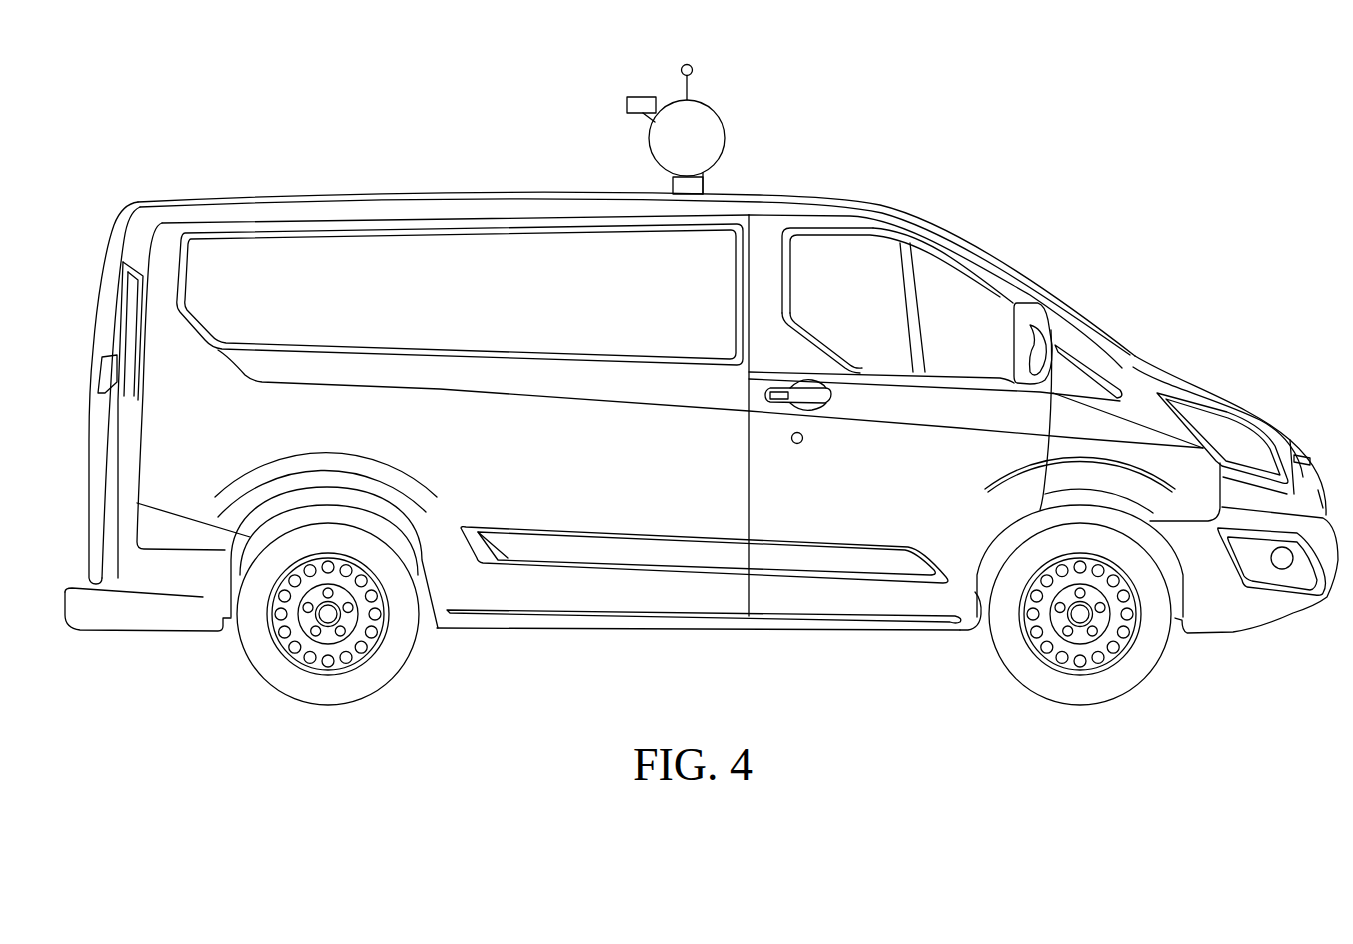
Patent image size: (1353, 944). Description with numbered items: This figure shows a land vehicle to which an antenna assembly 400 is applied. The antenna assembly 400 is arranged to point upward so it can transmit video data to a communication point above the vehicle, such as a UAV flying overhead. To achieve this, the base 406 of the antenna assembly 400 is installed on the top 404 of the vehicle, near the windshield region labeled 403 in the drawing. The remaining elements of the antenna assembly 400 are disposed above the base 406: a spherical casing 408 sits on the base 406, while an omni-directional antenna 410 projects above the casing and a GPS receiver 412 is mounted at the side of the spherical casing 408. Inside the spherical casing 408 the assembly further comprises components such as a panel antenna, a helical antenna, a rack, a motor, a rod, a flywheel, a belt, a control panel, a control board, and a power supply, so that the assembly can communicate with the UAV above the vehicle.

The antenna assembly 400 is at (676, 100).
The windshield 403 is at (1098, 358).
The top of the vehicle 404 is at (566, 186).
The base 406 is at (706, 182).
The spherical casing 408 is at (717, 138).
The omni-directional antenna 410 is at (690, 82).
The GPS receiver 412 is at (627, 106).